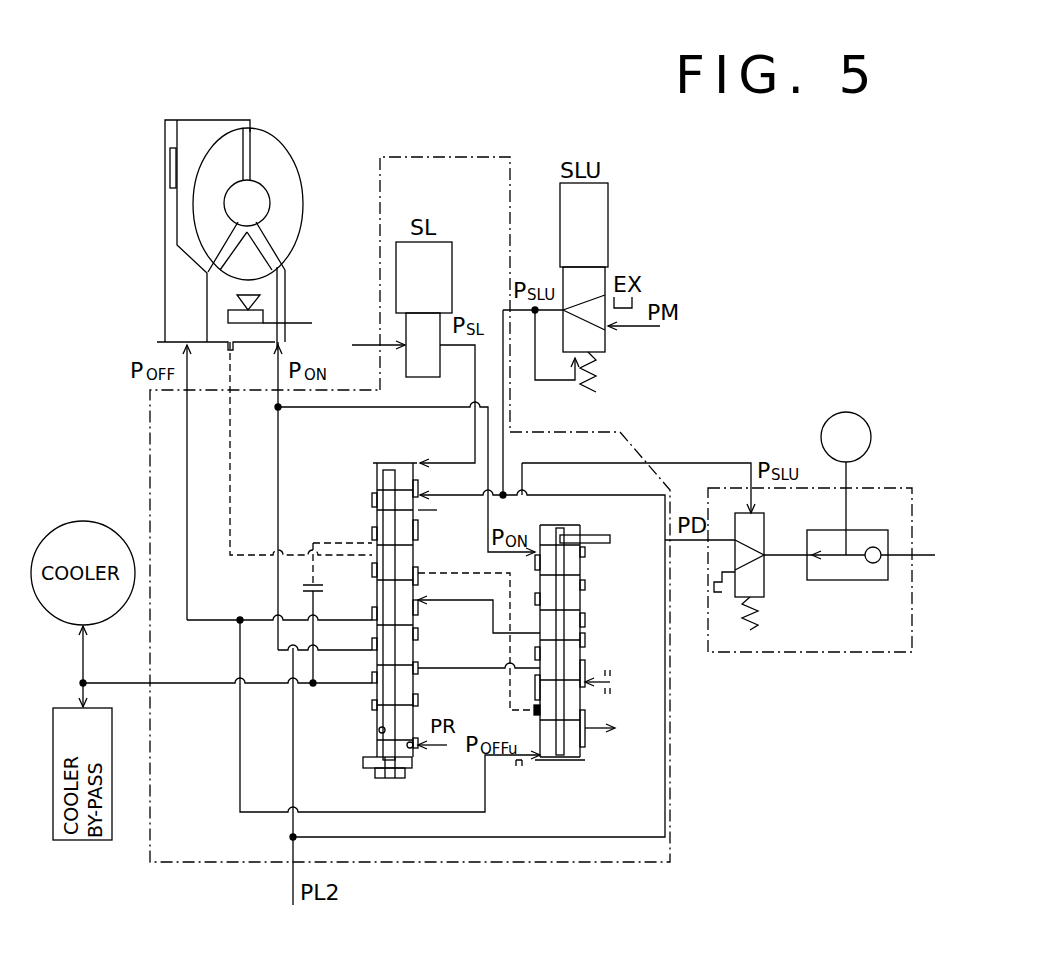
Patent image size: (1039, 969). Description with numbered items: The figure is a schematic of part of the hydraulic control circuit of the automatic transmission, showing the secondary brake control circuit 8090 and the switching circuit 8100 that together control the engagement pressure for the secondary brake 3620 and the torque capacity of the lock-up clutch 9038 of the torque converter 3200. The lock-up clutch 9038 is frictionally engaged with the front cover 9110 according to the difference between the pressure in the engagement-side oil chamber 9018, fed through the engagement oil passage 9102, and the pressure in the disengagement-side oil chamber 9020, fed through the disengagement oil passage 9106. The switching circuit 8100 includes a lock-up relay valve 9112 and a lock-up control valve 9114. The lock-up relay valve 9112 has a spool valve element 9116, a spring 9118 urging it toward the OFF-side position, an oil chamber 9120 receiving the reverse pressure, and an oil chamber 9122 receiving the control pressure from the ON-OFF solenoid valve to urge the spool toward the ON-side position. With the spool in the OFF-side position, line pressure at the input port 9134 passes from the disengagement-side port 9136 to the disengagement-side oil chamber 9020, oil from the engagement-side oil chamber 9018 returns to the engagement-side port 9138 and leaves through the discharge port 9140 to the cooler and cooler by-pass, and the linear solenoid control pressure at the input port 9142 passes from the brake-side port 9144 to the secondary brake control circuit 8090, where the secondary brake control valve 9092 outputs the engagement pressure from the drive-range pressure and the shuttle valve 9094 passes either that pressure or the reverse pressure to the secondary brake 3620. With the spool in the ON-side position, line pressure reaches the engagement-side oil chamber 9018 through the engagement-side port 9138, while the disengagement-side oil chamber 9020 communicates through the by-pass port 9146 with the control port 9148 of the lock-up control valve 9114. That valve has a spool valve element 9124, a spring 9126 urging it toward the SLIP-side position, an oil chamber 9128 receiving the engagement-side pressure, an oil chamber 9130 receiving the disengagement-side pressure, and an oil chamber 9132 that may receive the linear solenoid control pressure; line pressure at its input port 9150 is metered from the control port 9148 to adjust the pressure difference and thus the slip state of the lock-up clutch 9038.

The torque converter 3200 is at (283, 133).
The B2 brake 3620 is at (856, 415).
The switching circuit 8100 is at (488, 132).
The B2 brake control circuit 8090 is at (827, 612).
The engagement-side oil chamber 9018 is at (215, 122).
The disengagement-side oil chamber 9020 is at (178, 280).
The lock-up clutch 9038 is at (183, 150).
The secondary brake control valve 9092 is at (766, 600).
The shuttle valve 9094 is at (845, 585).
The engagement oil passage 9102 is at (283, 285).
The disengagement oil passage 9106 is at (187, 342).
The front cover 9110 is at (165, 137).
The lock-up relay valve 9112 is at (370, 733).
The lock-up control valve 9114 is at (592, 669).
The spool valve element 9116 is at (405, 552).
The spring 9118 is at (413, 757).
The oil chamber 9120 is at (414, 697).
The oil chamber 9122 is at (377, 593).
The spool valve element 9124 is at (570, 647).
The spring 9126 is at (575, 585).
The oil chamber 9128 is at (578, 553).
The oil chamber 9130 is at (580, 750).
The oil chamber 9132 is at (452, 629).
The input port 9134 is at (372, 635).
The disengagement-side port 9136 is at (372, 618).
The engagement-side port 9138 is at (372, 650).
The discharge port 9140 is at (372, 685).
The input port 9142 is at (439, 453).
The brake-side port 9144 is at (437, 512).
The by-pass port 9146 is at (479, 601).
The control port 9148 is at (479, 664).
The input port 9150 is at (622, 697).